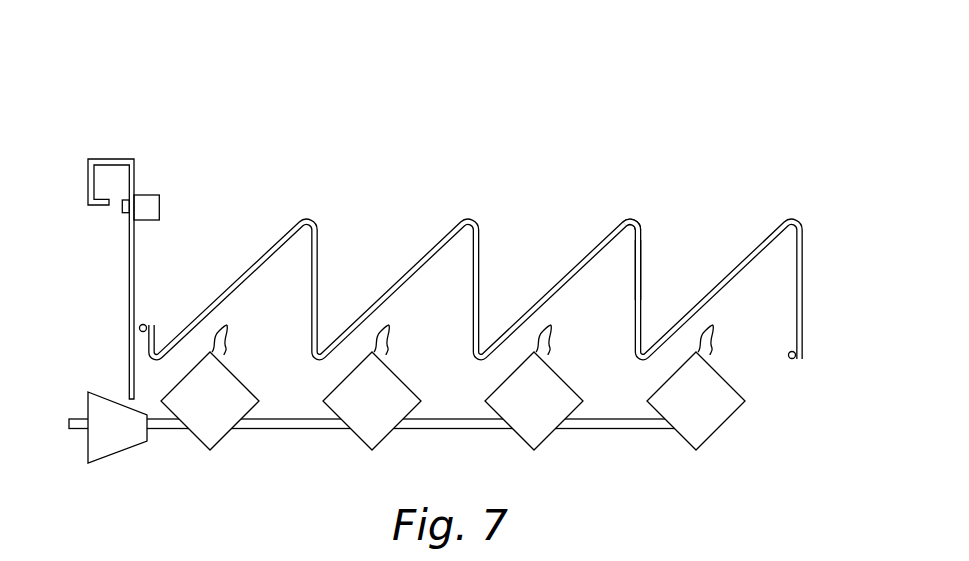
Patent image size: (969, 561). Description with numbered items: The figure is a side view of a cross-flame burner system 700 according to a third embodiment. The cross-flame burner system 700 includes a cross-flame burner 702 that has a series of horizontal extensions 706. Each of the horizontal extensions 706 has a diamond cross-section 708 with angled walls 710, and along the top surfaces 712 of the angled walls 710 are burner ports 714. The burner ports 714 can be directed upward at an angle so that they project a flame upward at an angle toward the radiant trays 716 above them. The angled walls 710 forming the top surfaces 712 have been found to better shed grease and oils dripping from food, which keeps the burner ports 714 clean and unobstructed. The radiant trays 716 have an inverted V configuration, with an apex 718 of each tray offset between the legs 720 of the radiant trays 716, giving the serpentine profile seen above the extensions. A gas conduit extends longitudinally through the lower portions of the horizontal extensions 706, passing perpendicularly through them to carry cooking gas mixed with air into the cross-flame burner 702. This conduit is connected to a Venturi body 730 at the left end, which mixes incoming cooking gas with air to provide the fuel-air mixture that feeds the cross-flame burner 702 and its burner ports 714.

The cross-flame burner system 700 is at (102, 103).
The cross-flame burner 702 is at (765, 395).
The horizontal extensions 706 is at (718, 407).
The diamond cross-section 708 is at (190, 393).
The angled walls 710 is at (237, 373).
The top surfaces 712 is at (528, 348).
The burner ports 714 is at (708, 359).
The radiant trays 716 is at (418, 237).
The apex 718 is at (631, 220).
The legs 720 is at (641, 278).
The Venturi body 730 is at (88, 405).